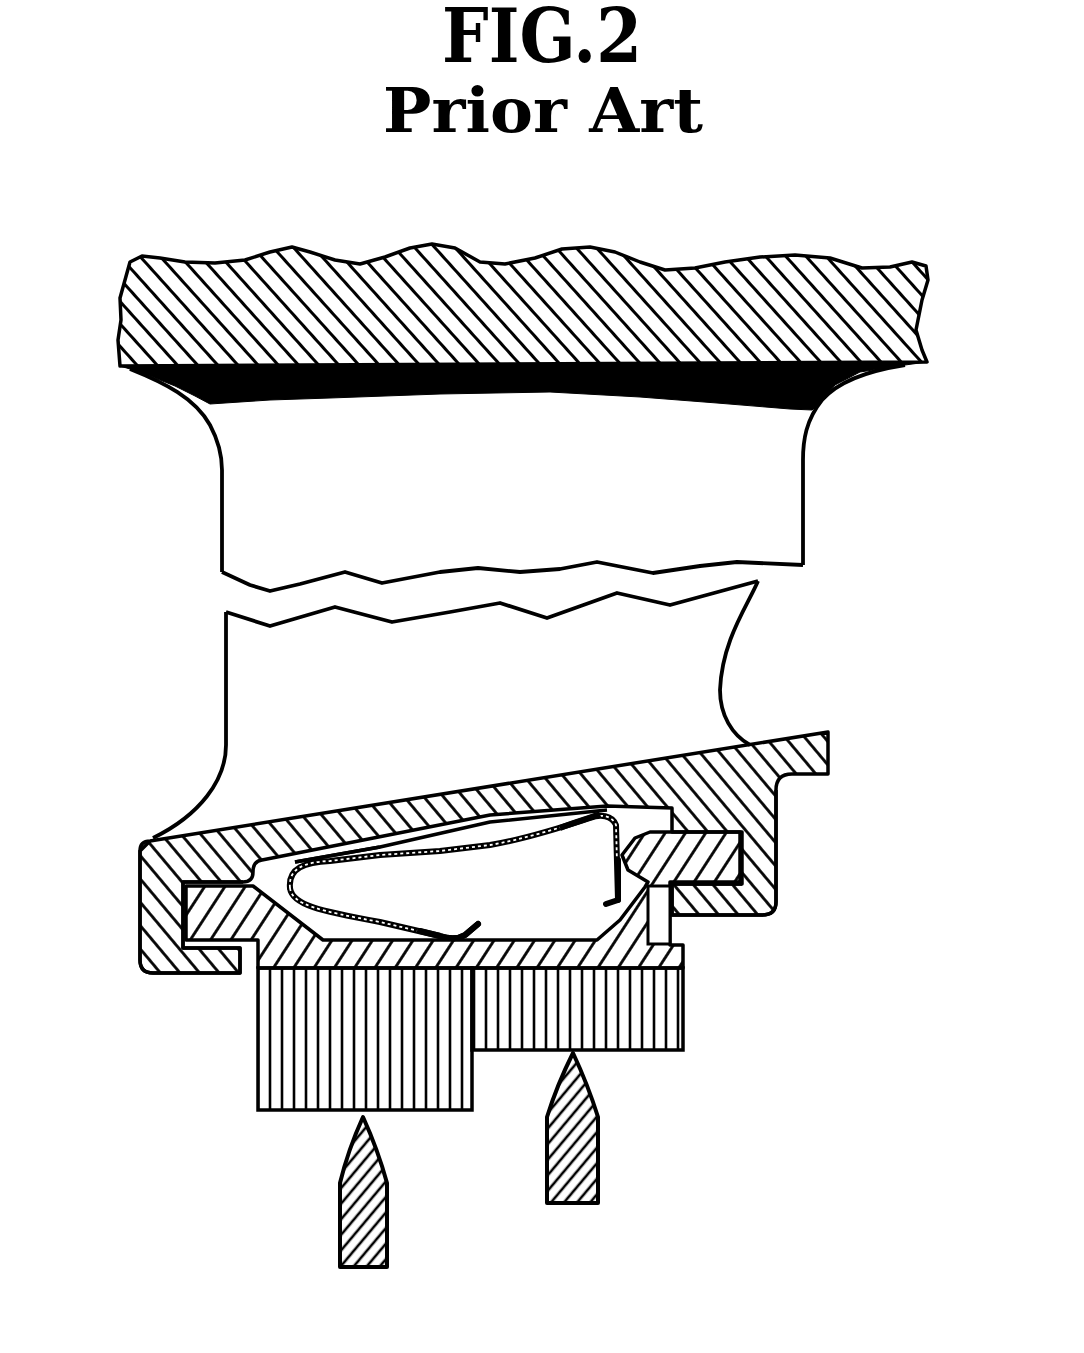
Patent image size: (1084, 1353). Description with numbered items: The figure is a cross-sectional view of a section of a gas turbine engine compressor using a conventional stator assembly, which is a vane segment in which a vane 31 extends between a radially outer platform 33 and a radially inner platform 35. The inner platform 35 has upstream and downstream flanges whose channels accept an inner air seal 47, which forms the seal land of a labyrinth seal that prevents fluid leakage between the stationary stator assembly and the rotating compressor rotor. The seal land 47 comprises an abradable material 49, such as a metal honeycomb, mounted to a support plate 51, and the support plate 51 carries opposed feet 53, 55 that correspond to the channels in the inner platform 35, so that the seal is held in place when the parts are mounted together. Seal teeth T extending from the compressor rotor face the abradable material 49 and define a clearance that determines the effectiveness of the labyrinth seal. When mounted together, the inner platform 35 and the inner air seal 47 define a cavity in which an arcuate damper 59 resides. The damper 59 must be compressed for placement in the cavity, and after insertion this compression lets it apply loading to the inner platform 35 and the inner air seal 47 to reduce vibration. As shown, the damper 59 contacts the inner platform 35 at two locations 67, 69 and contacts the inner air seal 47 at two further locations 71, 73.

The vane 31 is at (549, 517).
The radially outer platform 33 is at (567, 290).
The radially inner platform 35 is at (830, 752).
The inner air seal 47 is at (264, 1036).
The abradable material 49 is at (618, 1053).
The support plate 51 is at (688, 944).
The foot 53 is at (138, 890).
The foot 55 is at (705, 866).
The arcuate damper 59 is at (455, 848).
The contact location 67 is at (300, 826).
The contact location 69 is at (597, 800).
The contact location 71 is at (431, 937).
The contact location 73 is at (612, 904).
The seal teeth T is at (548, 1155).